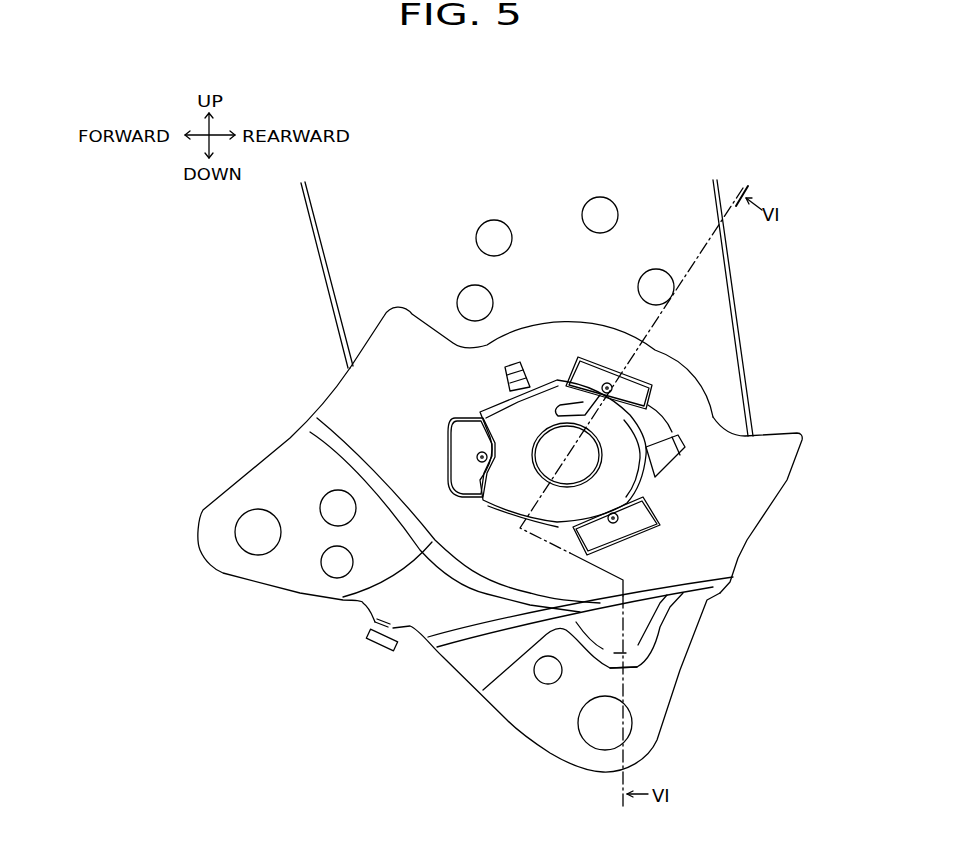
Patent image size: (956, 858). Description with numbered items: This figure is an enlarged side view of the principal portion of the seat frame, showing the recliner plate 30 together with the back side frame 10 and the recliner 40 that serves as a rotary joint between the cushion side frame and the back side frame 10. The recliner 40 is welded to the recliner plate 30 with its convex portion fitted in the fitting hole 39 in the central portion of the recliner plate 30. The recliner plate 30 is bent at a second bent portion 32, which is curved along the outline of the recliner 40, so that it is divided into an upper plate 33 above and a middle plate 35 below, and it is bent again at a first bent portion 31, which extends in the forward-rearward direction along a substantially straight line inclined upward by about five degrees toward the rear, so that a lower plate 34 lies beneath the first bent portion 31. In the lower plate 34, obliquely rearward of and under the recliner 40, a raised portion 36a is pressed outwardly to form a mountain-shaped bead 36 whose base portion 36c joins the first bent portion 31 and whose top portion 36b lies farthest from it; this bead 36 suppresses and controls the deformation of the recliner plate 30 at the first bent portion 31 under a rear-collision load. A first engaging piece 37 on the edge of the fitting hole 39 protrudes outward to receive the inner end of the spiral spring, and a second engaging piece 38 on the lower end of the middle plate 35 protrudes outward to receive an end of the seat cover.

The back side frame 10 is at (707, 302).
The recliner plate 30 is at (757, 546).
The first bent portion 31 is at (707, 590).
The second bent portion 32 is at (343, 597).
The upper plate 33 is at (724, 509).
The lower plate 34 is at (561, 719).
The middle plate 35 is at (302, 494).
The bead 36 is at (663, 645).
The raised portion 36a is at (640, 637).
The top portion 36b is at (630, 668).
The base portion 36c is at (673, 602).
The first engaging piece 37 is at (588, 377).
The second engaging piece 38 is at (378, 647).
The fitting hole 39 is at (675, 474).
The recliner 40 is at (620, 438).